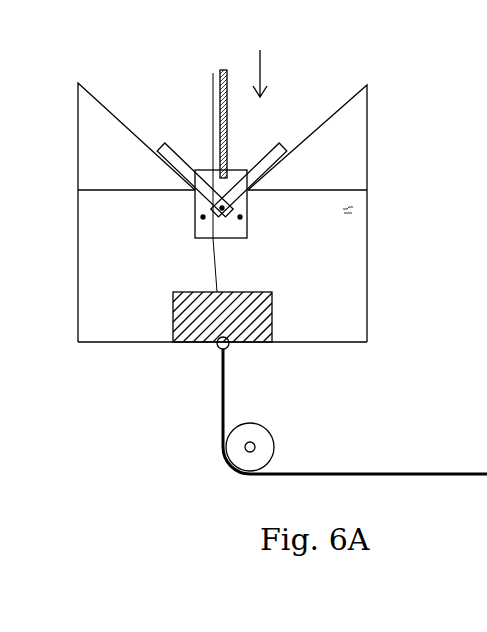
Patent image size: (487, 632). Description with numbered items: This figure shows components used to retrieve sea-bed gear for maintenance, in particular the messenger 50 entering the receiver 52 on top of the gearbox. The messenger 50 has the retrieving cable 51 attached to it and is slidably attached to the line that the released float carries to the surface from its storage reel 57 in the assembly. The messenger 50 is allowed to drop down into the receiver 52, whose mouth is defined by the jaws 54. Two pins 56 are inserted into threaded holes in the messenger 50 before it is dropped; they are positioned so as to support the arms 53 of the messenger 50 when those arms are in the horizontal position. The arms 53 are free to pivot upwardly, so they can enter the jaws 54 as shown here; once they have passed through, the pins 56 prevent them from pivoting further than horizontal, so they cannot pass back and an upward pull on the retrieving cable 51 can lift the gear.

The messenger 50 is at (236, 168).
The retrieving cable 51 is at (227, 80).
The receiver 52 is at (357, 233).
The arms 53 is at (168, 151).
The jaws 54 is at (134, 180).
The pins 56 is at (193, 225).
The storage reel 57 is at (272, 318).